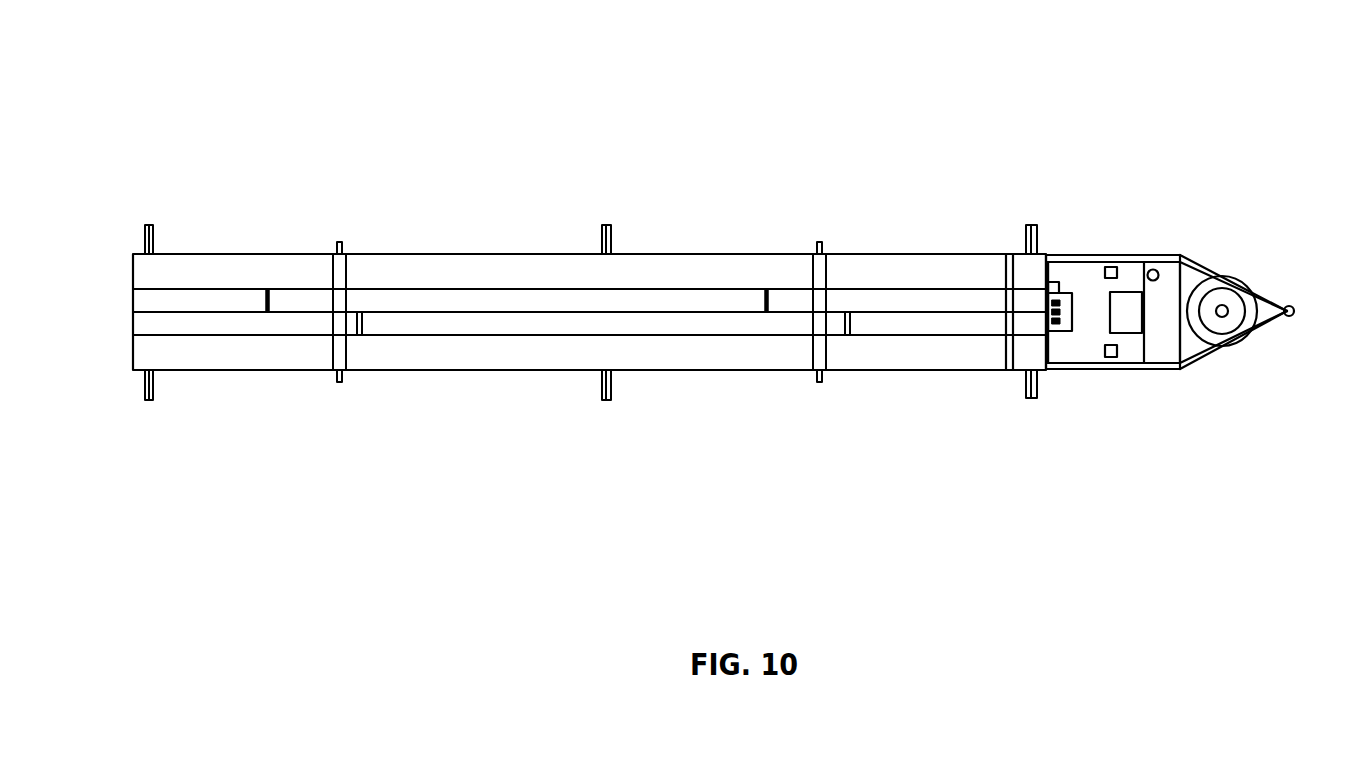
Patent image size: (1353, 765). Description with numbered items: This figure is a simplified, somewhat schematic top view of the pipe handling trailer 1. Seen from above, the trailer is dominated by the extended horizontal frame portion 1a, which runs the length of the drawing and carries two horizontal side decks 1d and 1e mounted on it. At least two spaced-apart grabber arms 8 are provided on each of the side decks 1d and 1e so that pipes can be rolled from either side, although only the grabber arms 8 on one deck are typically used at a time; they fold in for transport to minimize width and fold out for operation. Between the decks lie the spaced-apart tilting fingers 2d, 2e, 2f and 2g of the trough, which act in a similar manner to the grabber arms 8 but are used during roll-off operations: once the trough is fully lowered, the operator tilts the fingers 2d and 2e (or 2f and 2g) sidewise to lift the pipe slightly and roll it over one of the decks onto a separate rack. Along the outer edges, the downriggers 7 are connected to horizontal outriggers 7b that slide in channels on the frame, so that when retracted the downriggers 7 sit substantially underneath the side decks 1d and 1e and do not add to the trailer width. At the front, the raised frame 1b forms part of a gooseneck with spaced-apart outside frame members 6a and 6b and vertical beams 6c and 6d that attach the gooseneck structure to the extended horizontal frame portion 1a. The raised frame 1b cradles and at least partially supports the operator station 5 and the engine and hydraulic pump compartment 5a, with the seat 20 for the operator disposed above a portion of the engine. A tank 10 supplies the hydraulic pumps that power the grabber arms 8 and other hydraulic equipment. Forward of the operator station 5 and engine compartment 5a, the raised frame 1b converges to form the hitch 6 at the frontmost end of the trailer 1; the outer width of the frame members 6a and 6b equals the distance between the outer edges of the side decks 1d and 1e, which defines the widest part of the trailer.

The pipe handling trailer 1 is at (229, 97).
The extended horizontal frame portion 1a is at (1055, 503).
The raised frame 1b is at (1295, 503).
The side deck 1d is at (697, 275).
The side deck 1e is at (762, 355).
The tilting finger 2d is at (268, 292).
The tilting finger 2e is at (767, 292).
The tilting finger 2f is at (360, 336).
The tilting finger 2g is at (848, 336).
The operator station 5 is at (1088, 277).
The engine compartment 5a is at (1113, 370).
The hitch 6 is at (1292, 307).
The outside frame member 6a is at (1136, 252).
The outside frame member 6b is at (1170, 369).
The vertical beam 6c is at (1055, 258).
The vertical beam 6d is at (1060, 370).
The downrigger 7 is at (149, 225).
The horizontal outrigger 7b is at (155, 240).
The grabber arm 8 is at (339, 242).
The tank 10 is at (1165, 253).
The seat 20 is at (1130, 318).